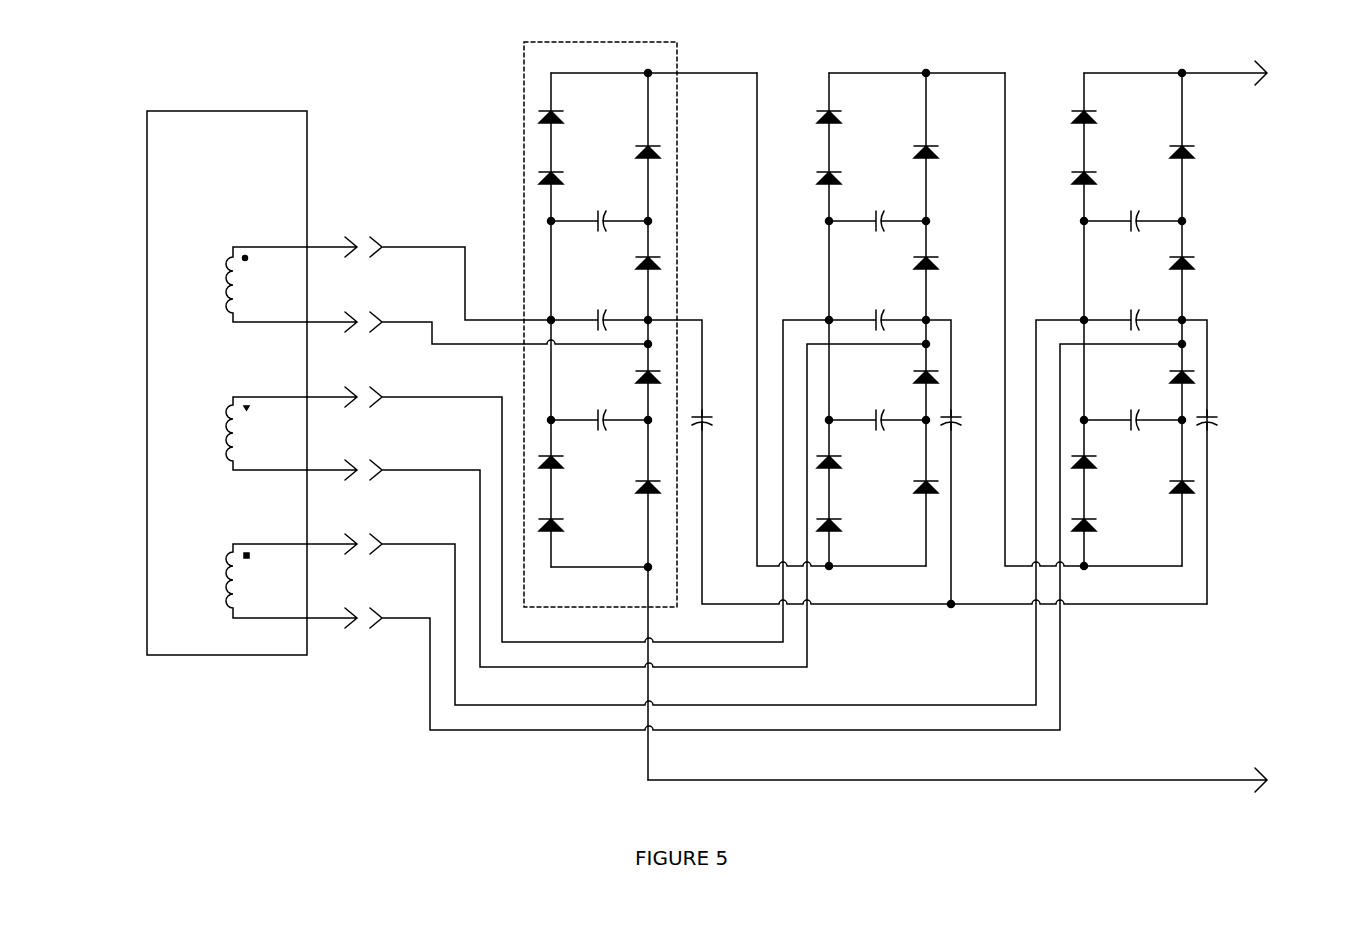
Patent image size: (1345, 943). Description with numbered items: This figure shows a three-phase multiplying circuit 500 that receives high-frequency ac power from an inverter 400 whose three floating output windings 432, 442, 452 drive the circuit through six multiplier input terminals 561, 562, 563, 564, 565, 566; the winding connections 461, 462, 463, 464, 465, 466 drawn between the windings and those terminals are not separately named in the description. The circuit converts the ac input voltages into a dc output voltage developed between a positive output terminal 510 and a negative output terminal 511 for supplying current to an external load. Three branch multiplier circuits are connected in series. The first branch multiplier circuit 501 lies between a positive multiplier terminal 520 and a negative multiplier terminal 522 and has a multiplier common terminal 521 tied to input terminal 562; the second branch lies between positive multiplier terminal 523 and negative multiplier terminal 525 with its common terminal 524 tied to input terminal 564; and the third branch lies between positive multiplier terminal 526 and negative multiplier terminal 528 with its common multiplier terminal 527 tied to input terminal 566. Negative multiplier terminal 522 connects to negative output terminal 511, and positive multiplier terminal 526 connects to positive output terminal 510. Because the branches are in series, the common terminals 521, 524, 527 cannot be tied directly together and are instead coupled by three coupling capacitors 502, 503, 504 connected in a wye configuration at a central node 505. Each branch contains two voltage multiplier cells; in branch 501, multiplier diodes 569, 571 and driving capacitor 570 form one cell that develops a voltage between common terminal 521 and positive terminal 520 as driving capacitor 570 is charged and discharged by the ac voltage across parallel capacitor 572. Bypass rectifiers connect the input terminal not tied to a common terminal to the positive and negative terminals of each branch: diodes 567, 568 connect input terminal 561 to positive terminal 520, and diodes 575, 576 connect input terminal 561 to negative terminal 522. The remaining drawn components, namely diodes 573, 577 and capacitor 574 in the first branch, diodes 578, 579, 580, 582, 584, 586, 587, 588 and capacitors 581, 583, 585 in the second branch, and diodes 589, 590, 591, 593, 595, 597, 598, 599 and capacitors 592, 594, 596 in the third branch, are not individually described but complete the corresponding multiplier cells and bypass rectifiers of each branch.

The inverter 400 is at (221, 655).
The floating output winding 432 is at (230, 268).
The floating output winding 442 is at (230, 416).
The floating output winding 452 is at (230, 564).
The winding output lead 461 is at (319, 247).
The winding output lead 462 is at (319, 322).
The winding output lead 463 is at (319, 397).
The winding output lead 464 is at (319, 470).
The winding output lead 465 is at (319, 544).
The winding output lead 466 is at (319, 618).
The three-phase multiplying circuit 500 is at (440, 121).
The branch multiplier circuit 501 is at (523, 82).
The coupling capacitor 502 is at (706, 420).
The coupling capacitor 503 is at (955, 420).
The coupling capacitor 504 is at (1211, 420).
The central node 505 is at (935, 605).
The positive output terminal 510 is at (1233, 73).
The negative output terminal 511 is at (1233, 780).
The positive multiplier terminal 520 is at (588, 73).
The multiplier common terminal 521 is at (690, 320).
The negative multiplier terminal 522 is at (578, 567).
The positive multiplier terminal 523 is at (883, 73).
The multiplier common terminal 524 is at (937, 320).
The negative multiplier terminal 525 is at (880, 566).
The positive multiplier terminal 526 is at (1123, 73).
The common multiplier terminal 527 is at (1193, 320).
The negative multiplier terminal 528 is at (1128, 566).
The multiplier input terminal 561 is at (387, 247).
The multiplier input terminal 562 is at (387, 322).
The multiplier input terminal 563 is at (387, 397).
The multiplier input terminal 564 is at (387, 470).
The multiplier input terminal 565 is at (387, 544).
The multiplier input terminal 566 is at (387, 618).
The diode 567 is at (564, 117).
The diode 568 is at (564, 178).
The multiplier diode 569 is at (635, 152).
The driving capacitor 570 is at (597, 213).
The multiplier diode 571 is at (635, 263).
The parallel capacitor 572 is at (597, 312).
The diode 573 is at (635, 377).
The capacitor 574 is at (597, 412).
The diode 575 is at (564, 462).
The diode 576 is at (564, 525).
The diode 577 is at (635, 487).
The diode 578 is at (842, 117).
The diode 579 is at (842, 178).
The diode 580 is at (913, 152).
The capacitor 581 is at (876, 213).
The diode 582 is at (913, 263).
The capacitor 583 is at (876, 312).
The diode 584 is at (913, 377).
The capacitor 585 is at (875, 412).
The diode 586 is at (842, 462).
The diode 587 is at (842, 525).
The diode 588 is at (913, 487).
The diode 589 is at (1071, 118).
The diode 590 is at (1071, 179).
The diode 591 is at (1169, 152).
The capacitor 592 is at (1131, 213).
The diode 593 is at (1169, 263).
The capacitor 594 is at (1131, 312).
The diode 595 is at (1169, 377).
The capacitor 596 is at (1130, 412).
The diode 597 is at (1097, 463).
The diode 598 is at (1097, 525).
The diode 599 is at (1169, 487).